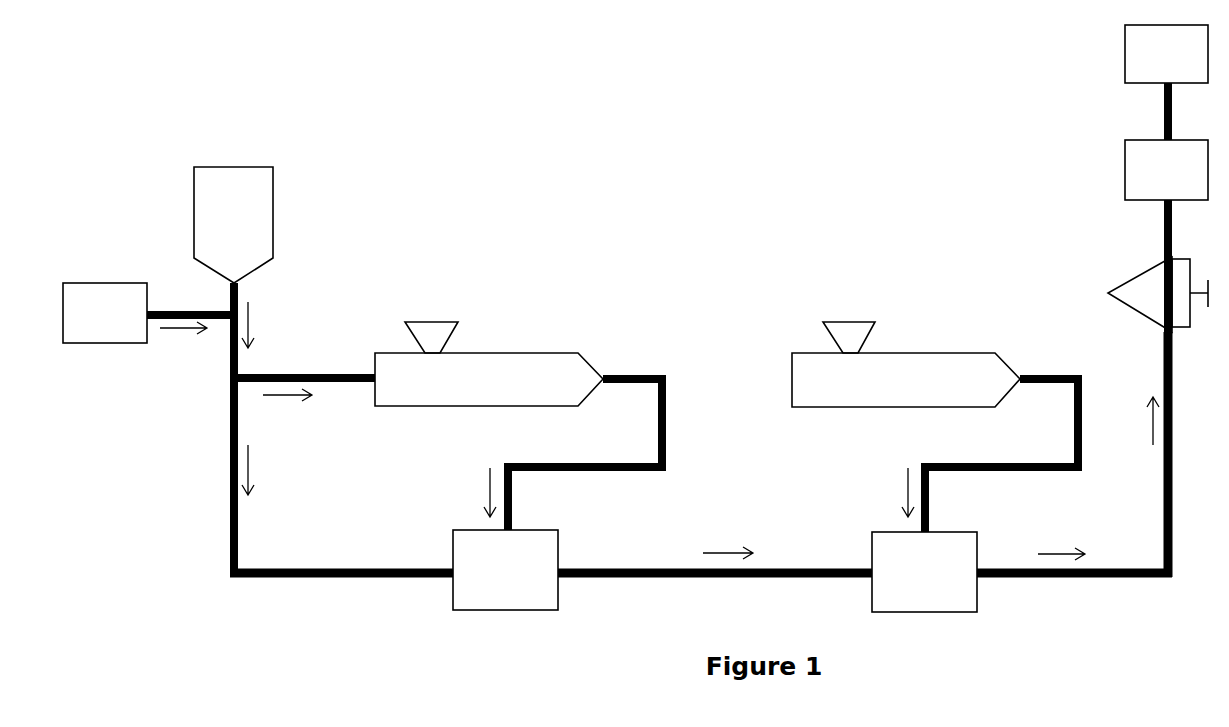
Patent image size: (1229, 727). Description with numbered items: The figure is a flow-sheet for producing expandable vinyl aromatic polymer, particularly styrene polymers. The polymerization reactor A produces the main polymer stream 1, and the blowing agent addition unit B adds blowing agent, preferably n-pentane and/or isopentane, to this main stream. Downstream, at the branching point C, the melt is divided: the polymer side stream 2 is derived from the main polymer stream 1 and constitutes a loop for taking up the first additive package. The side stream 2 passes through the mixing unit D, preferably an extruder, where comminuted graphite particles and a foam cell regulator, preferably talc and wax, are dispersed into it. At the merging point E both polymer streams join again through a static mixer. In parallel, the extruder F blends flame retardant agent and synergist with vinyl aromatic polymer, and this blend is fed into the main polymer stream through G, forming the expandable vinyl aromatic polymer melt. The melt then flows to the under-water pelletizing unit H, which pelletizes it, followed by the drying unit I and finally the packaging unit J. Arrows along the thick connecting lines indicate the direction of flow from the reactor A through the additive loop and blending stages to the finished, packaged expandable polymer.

The polymerization reactor A is at (233, 273).
The blowing agent addition unit B is at (150, 313).
The branching point C is at (220, 376).
The mixing unit D is at (518, 426).
The merging point E is at (603, 570).
The extruder F is at (935, 427).
The feed point G is at (978, 572).
The under-water pelletizing unit H is at (1158, 417).
The drying unit I is at (1166, 198).
The packaging unit J is at (1166, 82).
The main polymer stream 1 is at (230, 475).
The polymer side stream 2 is at (302, 372).